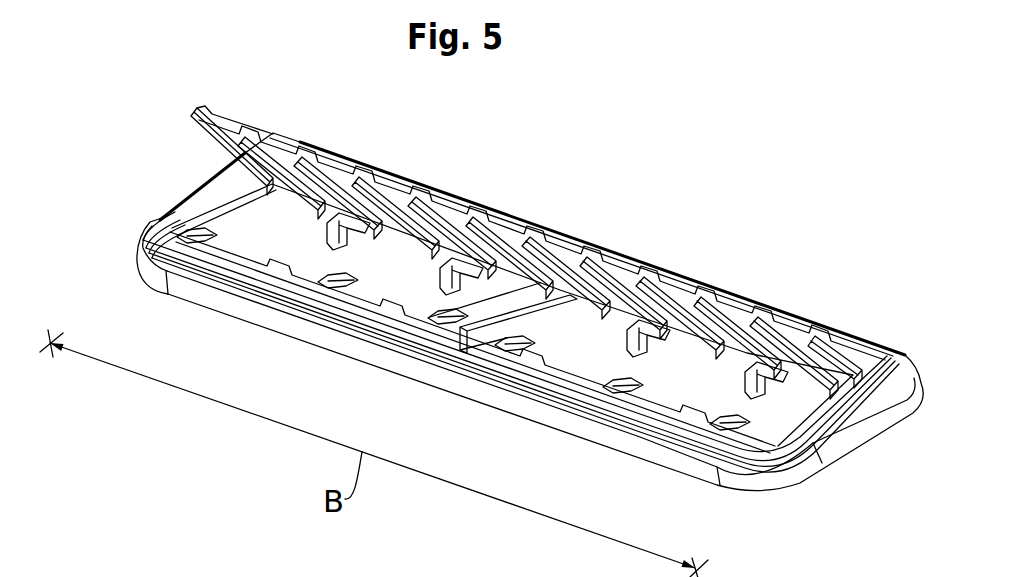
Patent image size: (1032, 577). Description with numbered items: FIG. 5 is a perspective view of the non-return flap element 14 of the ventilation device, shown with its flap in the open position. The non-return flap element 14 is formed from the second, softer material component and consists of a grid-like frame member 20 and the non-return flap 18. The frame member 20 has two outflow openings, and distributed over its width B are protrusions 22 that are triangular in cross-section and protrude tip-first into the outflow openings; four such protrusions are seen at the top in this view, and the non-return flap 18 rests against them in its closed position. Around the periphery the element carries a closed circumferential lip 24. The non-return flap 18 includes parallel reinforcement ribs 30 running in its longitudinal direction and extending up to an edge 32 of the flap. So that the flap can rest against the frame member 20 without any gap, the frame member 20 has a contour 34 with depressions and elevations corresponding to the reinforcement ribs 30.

The non-return flap element 14 is at (176, 148).
The non-return flap 18 is at (447, 192).
The grid-like frame member 20 is at (607, 393).
The protrusions 22 is at (217, 236).
The closed circumferential lip 24 is at (268, 320).
The reinforcement ribs 30 is at (358, 163).
The edge 32 is at (752, 308).
The contour with depressions and elevations 34 is at (387, 306).